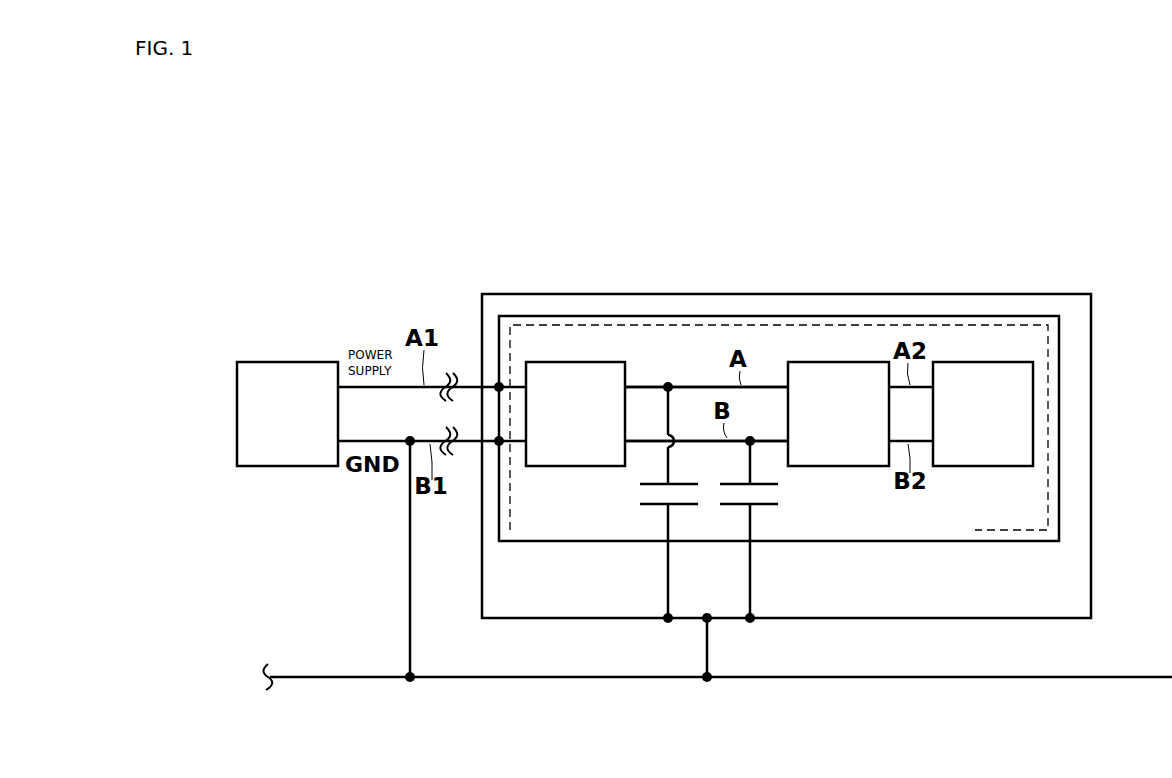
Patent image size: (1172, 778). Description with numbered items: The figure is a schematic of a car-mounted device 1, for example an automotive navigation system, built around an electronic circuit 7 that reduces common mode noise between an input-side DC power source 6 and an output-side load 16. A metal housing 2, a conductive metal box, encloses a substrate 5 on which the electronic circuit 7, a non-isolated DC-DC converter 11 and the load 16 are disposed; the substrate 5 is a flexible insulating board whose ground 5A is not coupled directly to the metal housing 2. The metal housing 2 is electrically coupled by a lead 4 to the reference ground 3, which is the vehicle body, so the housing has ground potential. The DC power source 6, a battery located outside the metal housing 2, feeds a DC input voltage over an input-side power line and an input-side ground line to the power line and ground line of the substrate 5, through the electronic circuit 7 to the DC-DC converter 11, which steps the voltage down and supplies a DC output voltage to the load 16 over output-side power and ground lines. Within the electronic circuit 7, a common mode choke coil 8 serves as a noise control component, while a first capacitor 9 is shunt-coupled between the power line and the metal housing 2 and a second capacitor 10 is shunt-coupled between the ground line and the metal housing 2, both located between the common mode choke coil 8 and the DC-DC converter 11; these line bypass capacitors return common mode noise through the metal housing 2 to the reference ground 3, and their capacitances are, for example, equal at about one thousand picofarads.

The car-mounted device 1 is at (758, 243).
The metal housing 2 is at (1092, 476).
The reference ground 3 is at (552, 681).
The lead 4 is at (709, 647).
The substrate 5 is at (1059, 429).
The ground 5A is at (1048, 383).
The DC power source 6 is at (286, 362).
The electronic circuit 7 is at (691, 346).
The common mode choke coil 8 is at (575, 362).
The first capacitor 9 is at (652, 508).
The second capacitor 10 is at (766, 507).
The DC-DC converter 11 is at (838, 362).
The load 16 is at (983, 362).